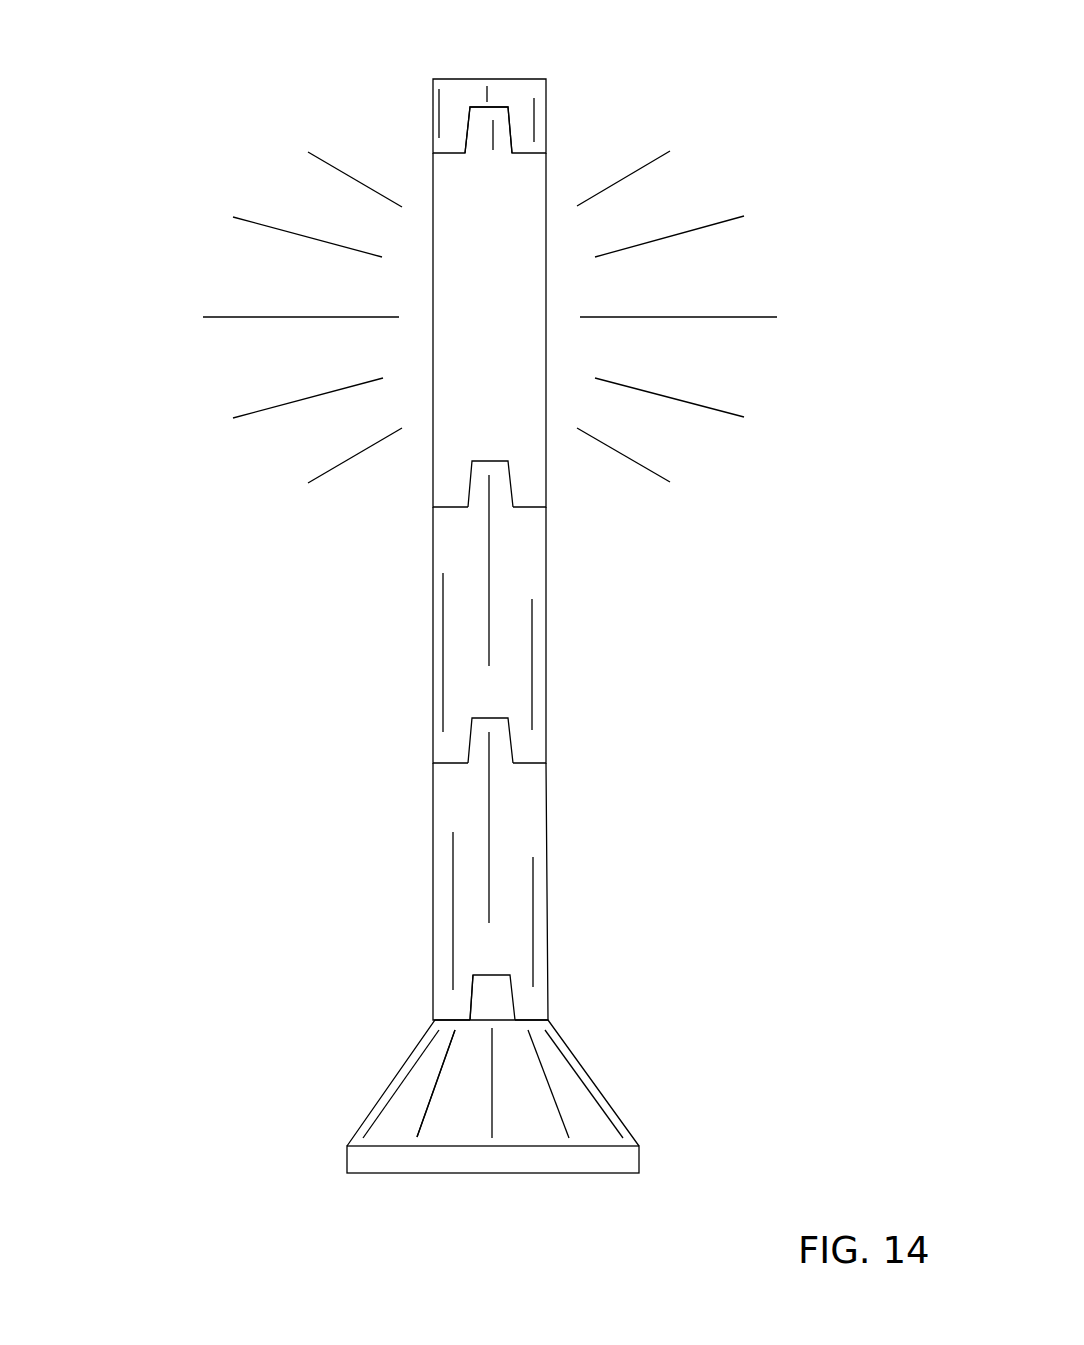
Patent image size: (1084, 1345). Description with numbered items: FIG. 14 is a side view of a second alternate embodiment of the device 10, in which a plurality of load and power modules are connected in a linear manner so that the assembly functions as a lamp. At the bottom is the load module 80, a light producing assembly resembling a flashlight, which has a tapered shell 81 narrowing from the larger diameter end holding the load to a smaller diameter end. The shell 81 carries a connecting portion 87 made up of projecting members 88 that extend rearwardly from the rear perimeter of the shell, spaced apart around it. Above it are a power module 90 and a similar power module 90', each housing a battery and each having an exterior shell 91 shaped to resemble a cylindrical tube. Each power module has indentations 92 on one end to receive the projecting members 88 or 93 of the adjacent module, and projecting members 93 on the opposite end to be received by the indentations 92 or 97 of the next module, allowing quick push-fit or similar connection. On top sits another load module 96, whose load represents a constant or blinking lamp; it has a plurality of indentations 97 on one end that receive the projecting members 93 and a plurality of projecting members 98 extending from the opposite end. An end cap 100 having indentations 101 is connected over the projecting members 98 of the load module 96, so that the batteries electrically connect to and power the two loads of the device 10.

The device 10 is at (130, 95).
The load module 80 is at (513, 1096).
The tapered shell 81 is at (570, 1083).
The connecting portion 87 is at (472, 1030).
The projecting members 88 is at (480, 988).
The power module 90 is at (516, 891).
The power module 90' is at (587, 635).
The exterior shell 91 is at (443, 882).
The indentations 92 is at (492, 973).
The projecting members 93 is at (499, 740).
The load module 96 is at (548, 292).
The indentations 97 is at (500, 458).
The projecting members 98 is at (490, 133).
The end cap 100 is at (549, 80).
The indentations 101 is at (483, 107).